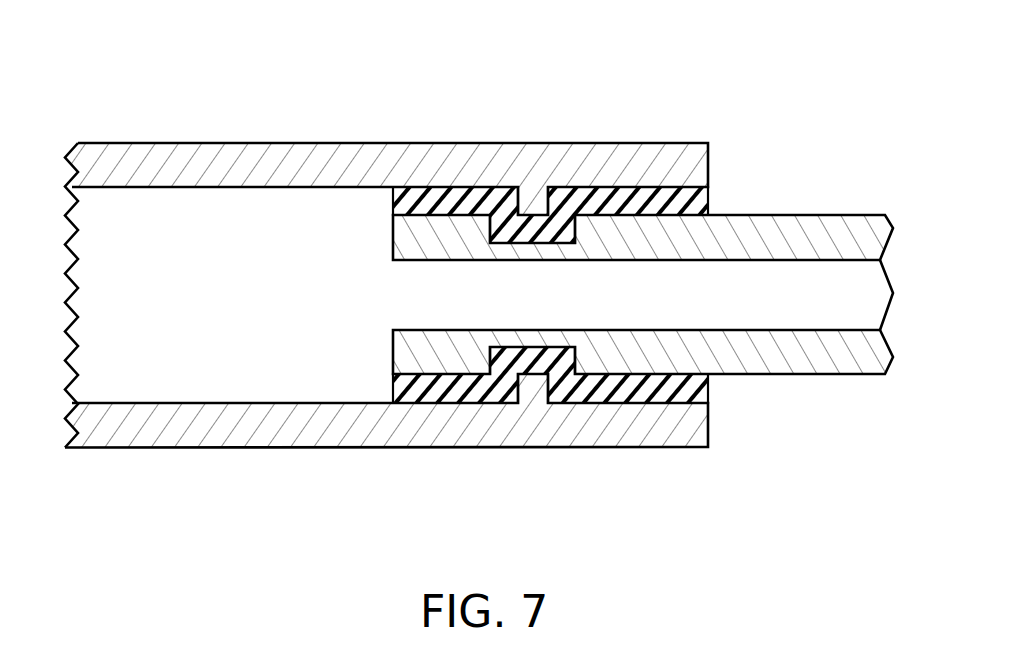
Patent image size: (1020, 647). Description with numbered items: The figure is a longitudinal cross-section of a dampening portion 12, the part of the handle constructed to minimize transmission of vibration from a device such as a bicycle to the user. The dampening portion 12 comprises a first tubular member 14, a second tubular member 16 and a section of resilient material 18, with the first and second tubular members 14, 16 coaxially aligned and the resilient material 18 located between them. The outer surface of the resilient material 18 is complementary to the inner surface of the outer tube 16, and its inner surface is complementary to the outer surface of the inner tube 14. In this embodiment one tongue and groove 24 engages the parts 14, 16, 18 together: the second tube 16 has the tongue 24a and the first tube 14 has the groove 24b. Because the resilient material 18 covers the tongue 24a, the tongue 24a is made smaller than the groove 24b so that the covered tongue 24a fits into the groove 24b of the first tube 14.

The dampening portion 12 is at (479, 290).
The first tubular member 14 is at (833, 215).
The second tubular member 16 is at (197, 143).
The section of resilient material 18 is at (707, 200).
The tongue and groove 24 is at (550, 429).
The tongue 24a is at (532, 392).
The groove 24b is at (545, 362).